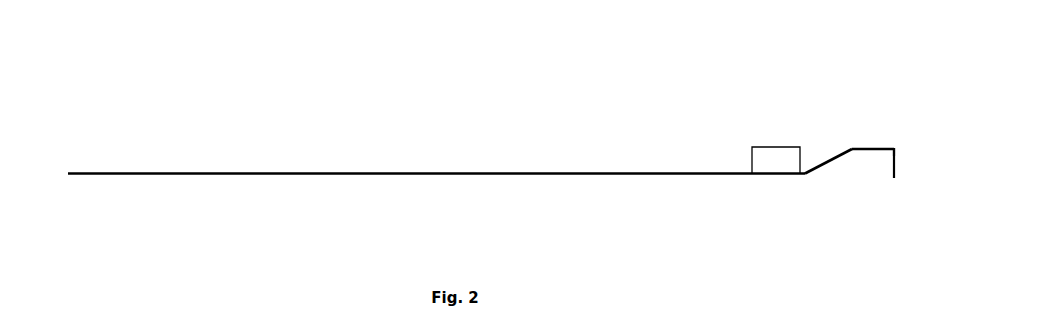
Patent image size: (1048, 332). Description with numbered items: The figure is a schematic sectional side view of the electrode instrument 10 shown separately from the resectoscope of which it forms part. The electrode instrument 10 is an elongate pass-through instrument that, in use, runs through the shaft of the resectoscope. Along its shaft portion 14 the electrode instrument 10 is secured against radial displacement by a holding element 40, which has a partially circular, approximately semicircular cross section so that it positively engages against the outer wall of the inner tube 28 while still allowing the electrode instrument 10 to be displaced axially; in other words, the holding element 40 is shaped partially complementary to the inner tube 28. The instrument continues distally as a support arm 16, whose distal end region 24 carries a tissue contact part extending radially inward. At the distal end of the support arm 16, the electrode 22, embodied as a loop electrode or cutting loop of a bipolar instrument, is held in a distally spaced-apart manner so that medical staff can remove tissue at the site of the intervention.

The electrode instrument 10 is at (719, 214).
The shaft portion 14 is at (476, 163).
The support arm 16 is at (832, 160).
The electrode 22 is at (895, 167).
The distal end region 24 is at (872, 139).
The inner tube 28 is at (884, 157).
The holding element 40 is at (771, 162).